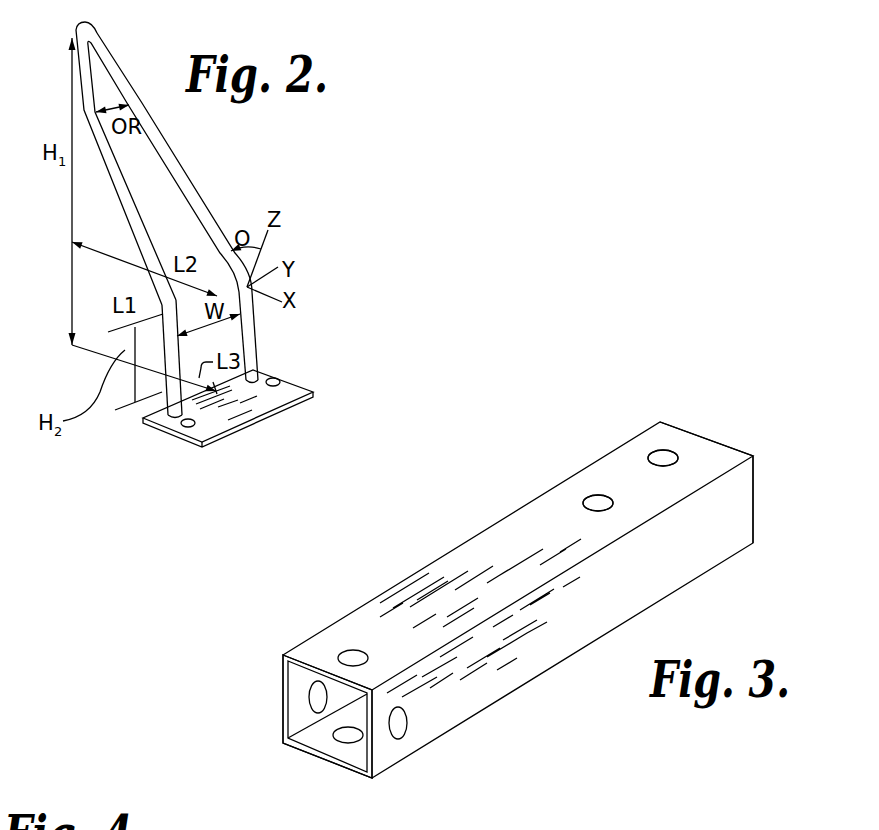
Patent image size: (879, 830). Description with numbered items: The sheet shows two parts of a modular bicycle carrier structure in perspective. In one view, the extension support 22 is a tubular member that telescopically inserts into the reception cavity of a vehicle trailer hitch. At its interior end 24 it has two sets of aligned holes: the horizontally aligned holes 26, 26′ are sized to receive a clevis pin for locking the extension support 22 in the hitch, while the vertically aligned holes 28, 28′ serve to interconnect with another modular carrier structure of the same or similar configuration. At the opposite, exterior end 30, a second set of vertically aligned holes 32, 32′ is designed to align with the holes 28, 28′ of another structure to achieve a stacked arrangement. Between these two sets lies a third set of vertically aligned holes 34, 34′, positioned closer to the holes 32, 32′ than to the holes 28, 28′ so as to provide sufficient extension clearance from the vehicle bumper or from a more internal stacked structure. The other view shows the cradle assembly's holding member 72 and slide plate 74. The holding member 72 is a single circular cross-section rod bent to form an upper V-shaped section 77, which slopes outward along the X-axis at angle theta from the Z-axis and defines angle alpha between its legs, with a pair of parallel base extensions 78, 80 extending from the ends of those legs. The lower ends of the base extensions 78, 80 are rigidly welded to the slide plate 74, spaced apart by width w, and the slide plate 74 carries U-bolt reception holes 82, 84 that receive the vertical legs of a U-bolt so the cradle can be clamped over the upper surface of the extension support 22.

In FIG. 3, the extension support 22 is at (493, 533).
In FIG. 3, the interior end 24 is at (313, 648).
In FIG. 3, the horizontally aligned hole 26 is at (310, 697).
In FIG. 3, the horizontally aligned hole 26′ is at (403, 723).
In FIG. 3, the vertically aligned hole 28 is at (354, 653).
In FIG. 3, the vertically aligned hole 28′ is at (345, 742).
In FIG. 3, the exterior end 30 is at (640, 443).
In FIG. 3, the vertically aligned hole 32 is at (668, 453).
In FIG. 3, the vertically aligned hole 32′ is at (663, 458).
In FIG. 3, the vertically aligned hole 34 is at (598, 497).
In FIG. 3, the vertically aligned hole 34′ is at (598, 503).
In FIG. 2, the holding member 72 is at (114, 183).
In FIG. 2, the slide plate 74 is at (303, 381).
In FIG. 2, the V-shaped section 77 is at (186, 182).
In FIG. 2, the base extension 78 is at (145, 350).
In FIG. 2, the base extension 80 is at (256, 348).
In FIG. 2, the U-bolt reception hole 82 is at (184, 425).
In FIG. 2, the U-bolt reception hole 84 is at (275, 381).